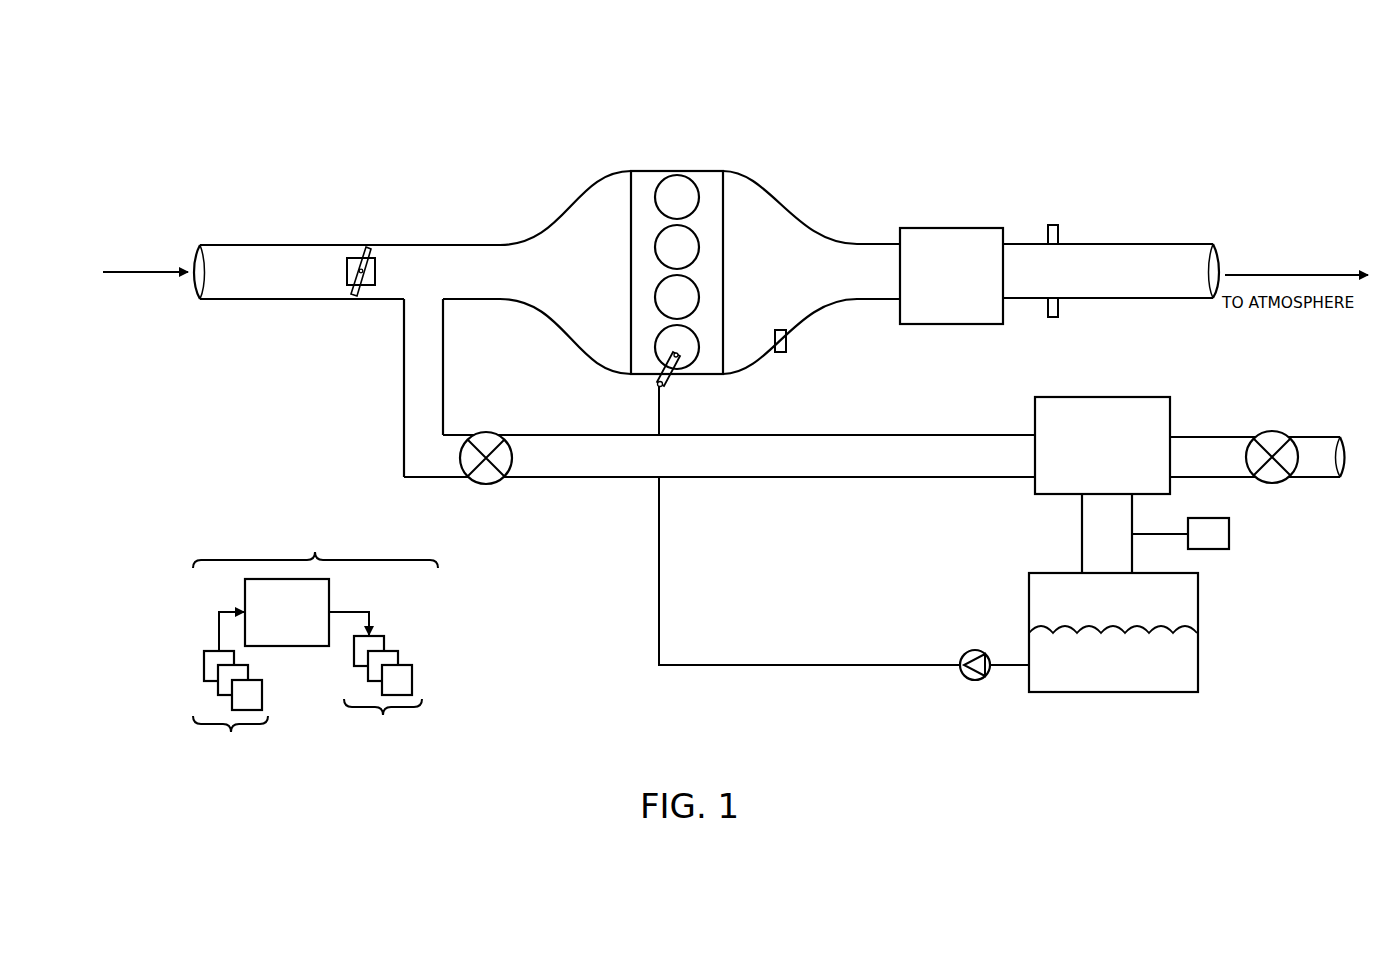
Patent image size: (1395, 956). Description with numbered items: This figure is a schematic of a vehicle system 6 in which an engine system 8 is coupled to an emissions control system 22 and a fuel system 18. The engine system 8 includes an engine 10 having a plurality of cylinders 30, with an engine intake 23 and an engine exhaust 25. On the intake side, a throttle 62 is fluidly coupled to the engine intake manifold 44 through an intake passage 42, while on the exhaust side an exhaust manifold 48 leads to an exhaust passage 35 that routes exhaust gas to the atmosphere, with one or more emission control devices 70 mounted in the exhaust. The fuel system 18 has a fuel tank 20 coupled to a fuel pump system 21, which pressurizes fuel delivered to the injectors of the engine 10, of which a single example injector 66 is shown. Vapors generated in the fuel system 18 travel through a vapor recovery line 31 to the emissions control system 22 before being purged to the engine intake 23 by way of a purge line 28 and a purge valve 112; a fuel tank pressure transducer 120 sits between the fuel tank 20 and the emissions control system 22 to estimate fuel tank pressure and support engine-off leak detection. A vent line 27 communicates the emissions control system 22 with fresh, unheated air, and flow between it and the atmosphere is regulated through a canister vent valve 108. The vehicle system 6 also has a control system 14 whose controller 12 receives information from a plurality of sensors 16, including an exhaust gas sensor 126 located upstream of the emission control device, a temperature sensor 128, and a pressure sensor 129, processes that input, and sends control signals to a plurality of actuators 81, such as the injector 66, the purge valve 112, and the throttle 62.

The vehicle system 6 is at (185, 113).
The engine system 8 is at (1036, 103).
The engine 10 is at (693, 272).
The controller 12 is at (287, 612).
The control system 14 is at (315, 639).
The sensors 16 is at (230, 690).
The fuel system 18 is at (1122, 735).
The fuel tank 20 is at (1198, 670).
The fuel pump system 21 is at (978, 650).
The emissions control system 22 is at (1170, 428).
The engine intake 23 is at (560, 192).
The engine exhaust 25 is at (943, 180).
The vent line 27 is at (1257, 457).
The purge line 28 is at (719, 456).
The cylinders 30 is at (699, 188).
The vapor recovery line 31 is at (1107, 533).
The exhaust passage 35 is at (1167, 244).
The intake passage 42 is at (392, 298).
The engine intake manifold 44 is at (565, 272).
The exhaust manifold 48 is at (811, 272).
The throttle 62 is at (382, 268).
The injector 66 is at (668, 384).
The emission control devices 70 is at (938, 228).
The actuators 81 is at (375, 682).
The canister vent valve 108 is at (1273, 431).
The purge valve 112 is at (486, 432).
The fuel tank pressure transducer 120 is at (1229, 542).
The exhaust gas sensor 126 is at (786, 337).
The temperature sensor 128 is at (1048, 312).
The pressure sensor 129 is at (1048, 236).